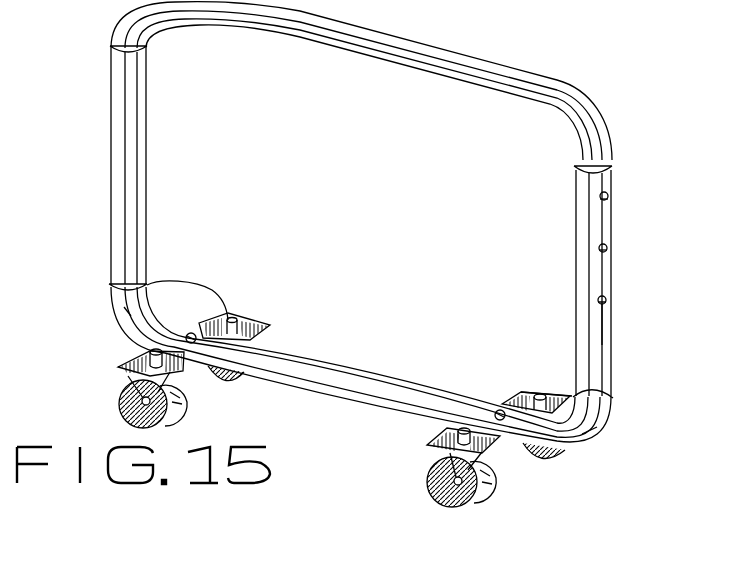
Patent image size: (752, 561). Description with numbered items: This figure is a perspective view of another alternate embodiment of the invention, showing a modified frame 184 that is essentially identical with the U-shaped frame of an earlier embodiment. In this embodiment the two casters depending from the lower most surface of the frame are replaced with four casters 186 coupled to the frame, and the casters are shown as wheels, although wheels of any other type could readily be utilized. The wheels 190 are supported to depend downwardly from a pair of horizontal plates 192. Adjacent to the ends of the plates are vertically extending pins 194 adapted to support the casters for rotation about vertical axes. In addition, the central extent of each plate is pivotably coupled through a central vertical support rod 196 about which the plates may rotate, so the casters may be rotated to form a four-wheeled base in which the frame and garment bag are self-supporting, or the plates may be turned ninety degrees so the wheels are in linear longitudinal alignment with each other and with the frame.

The modified frame 184 is at (605, 78).
The casters 186 is at (153, 420).
The wheels 190 is at (133, 357).
The horizontal plates 192 is at (118, 286).
The vertically extending pins 194 is at (247, 340).
The central vertical support rod 196 is at (200, 338).